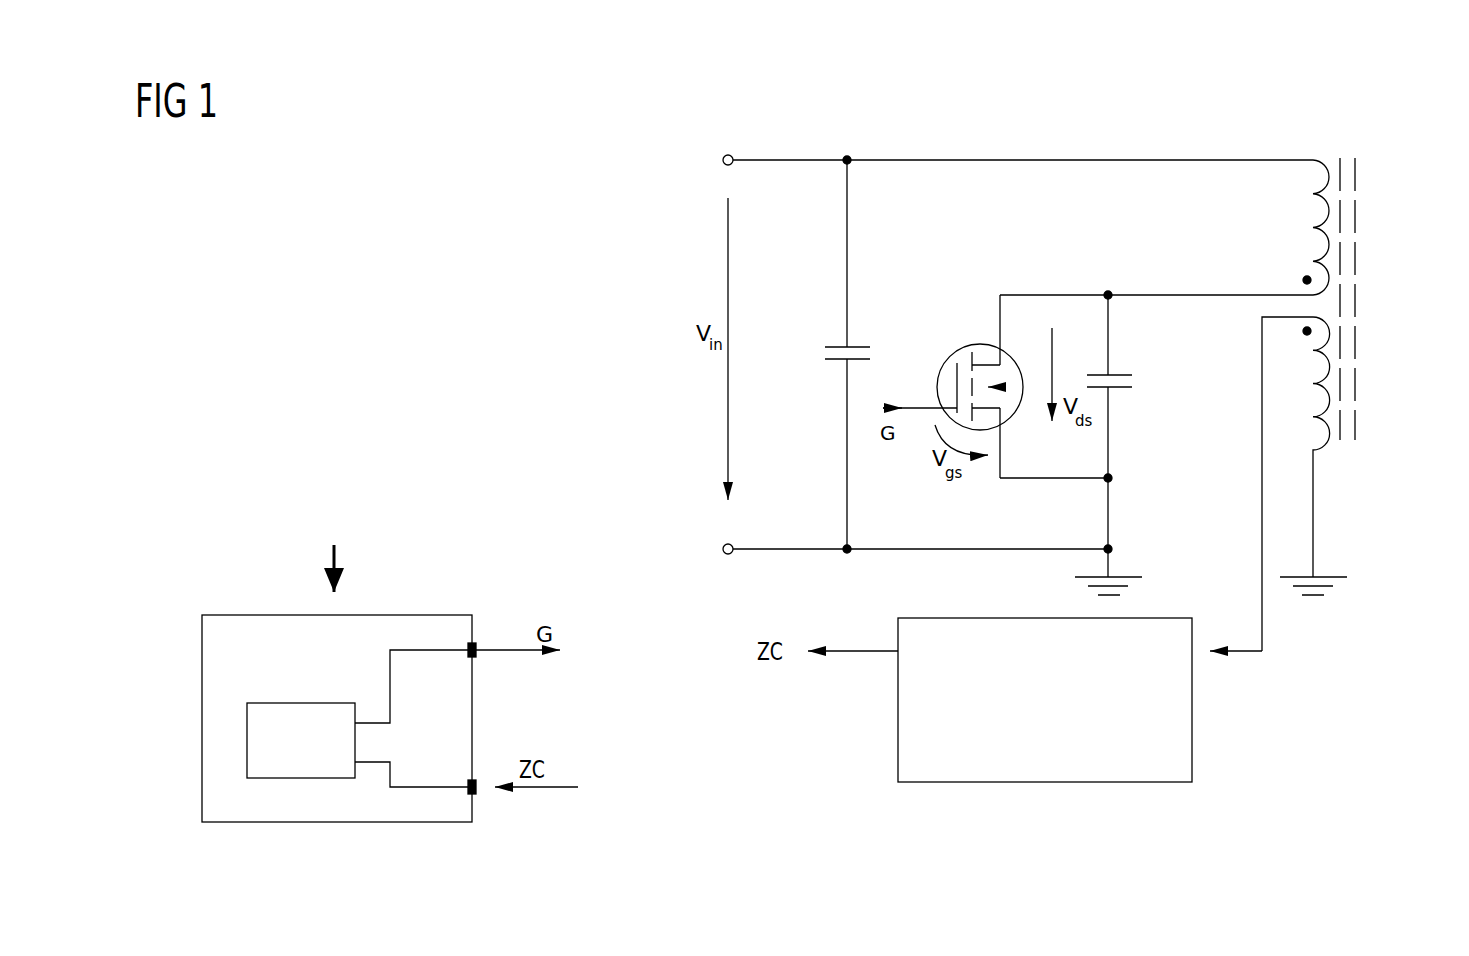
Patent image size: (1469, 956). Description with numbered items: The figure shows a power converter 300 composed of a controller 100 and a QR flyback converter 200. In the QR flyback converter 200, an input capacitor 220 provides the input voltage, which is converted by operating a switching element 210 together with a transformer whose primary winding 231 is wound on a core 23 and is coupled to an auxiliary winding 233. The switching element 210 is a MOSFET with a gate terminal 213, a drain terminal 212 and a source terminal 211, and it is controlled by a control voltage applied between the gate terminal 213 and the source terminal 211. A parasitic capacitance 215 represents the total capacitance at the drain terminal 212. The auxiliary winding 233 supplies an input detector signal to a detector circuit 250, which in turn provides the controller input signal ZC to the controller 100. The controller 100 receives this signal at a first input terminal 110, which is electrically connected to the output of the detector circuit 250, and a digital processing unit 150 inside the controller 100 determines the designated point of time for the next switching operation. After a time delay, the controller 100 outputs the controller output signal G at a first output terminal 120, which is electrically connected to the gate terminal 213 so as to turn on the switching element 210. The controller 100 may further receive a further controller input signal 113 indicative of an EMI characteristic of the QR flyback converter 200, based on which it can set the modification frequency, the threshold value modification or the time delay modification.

The power converter 300 is at (387, 219).
The QR flyback converter 200 is at (1321, 113).
The transformer core 23 is at (1377, 211).
The primary winding 231 is at (1290, 225).
The auxiliary winding 233 is at (1336, 384).
The input capacitor 220 is at (869, 324).
The switching element 210 is at (971, 355).
The drain terminal 212 is at (1004, 292).
The gate terminal 213 is at (930, 405).
The source terminal 211 is at (1003, 478).
The parasitic capacitance 215 is at (1128, 367).
The detector circuit 250 is at (1062, 712).
The controller 100 is at (210, 612).
The digital processing unit 150 is at (287, 700).
The first output terminal 120 is at (478, 648).
The first input terminal 110 is at (478, 794).
The further controller input signal 113 is at (336, 571).